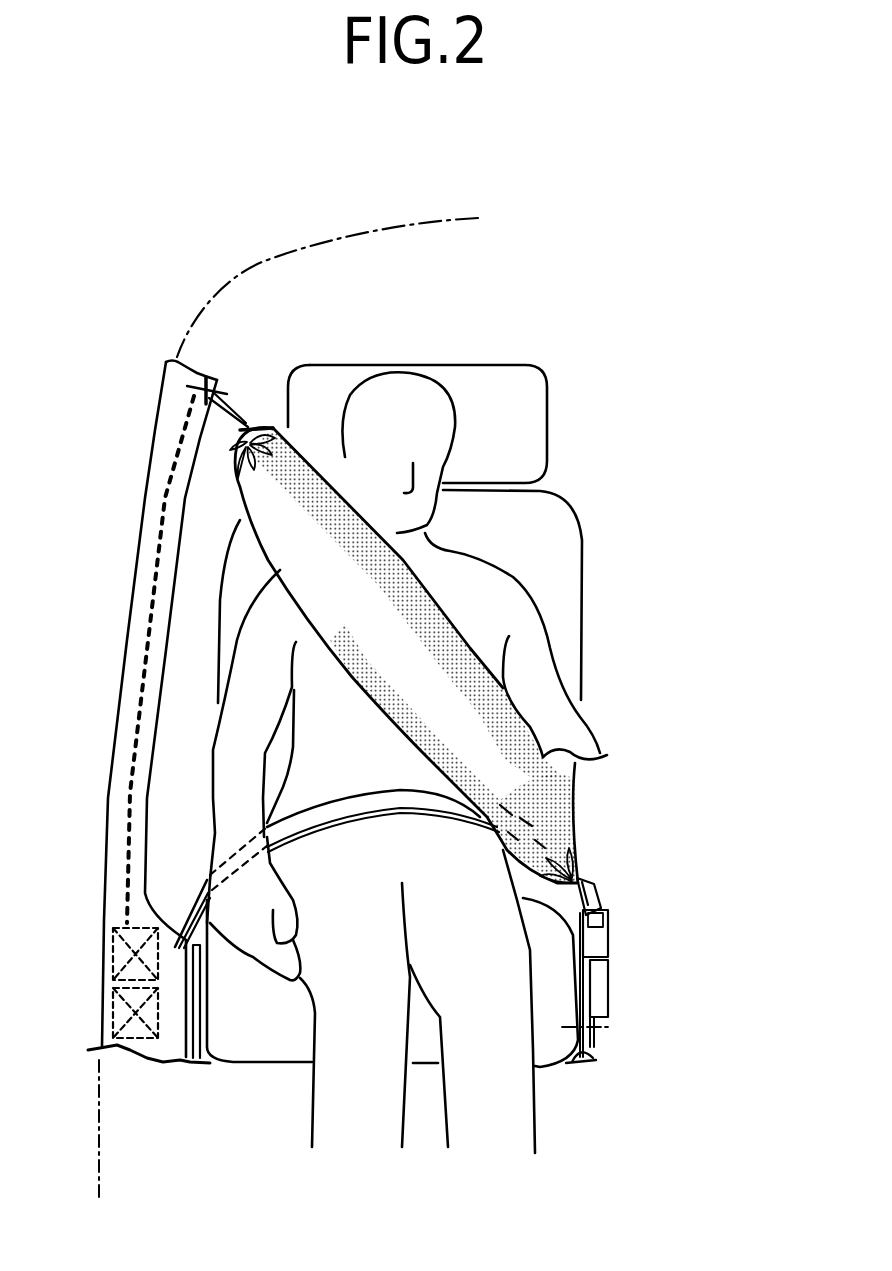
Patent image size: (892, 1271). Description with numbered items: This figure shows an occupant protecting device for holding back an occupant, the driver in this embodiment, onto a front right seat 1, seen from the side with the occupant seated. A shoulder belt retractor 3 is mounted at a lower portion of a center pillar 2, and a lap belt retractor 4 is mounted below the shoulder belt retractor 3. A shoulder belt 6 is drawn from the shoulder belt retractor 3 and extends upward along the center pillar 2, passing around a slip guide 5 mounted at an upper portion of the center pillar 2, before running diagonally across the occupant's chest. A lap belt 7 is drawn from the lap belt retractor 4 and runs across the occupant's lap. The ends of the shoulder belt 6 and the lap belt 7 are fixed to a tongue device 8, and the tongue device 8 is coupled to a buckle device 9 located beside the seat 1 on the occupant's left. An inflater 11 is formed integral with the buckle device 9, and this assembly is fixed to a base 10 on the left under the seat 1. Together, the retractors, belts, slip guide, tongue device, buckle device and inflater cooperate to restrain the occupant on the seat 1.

The front right seat 1 is at (590, 607).
The center pillar 2 is at (127, 637).
The shoulder belt retractor 3 is at (110, 945).
The lap belt retractor 4 is at (103, 1021).
The slip guide 5 is at (196, 430).
The shoulder belt 6 is at (349, 683).
The lap belt 7 is at (348, 808).
The tongue device 8 is at (600, 896).
The buckle device 9 is at (616, 928).
The base 10 is at (588, 1047).
The inflater 11 is at (614, 985).